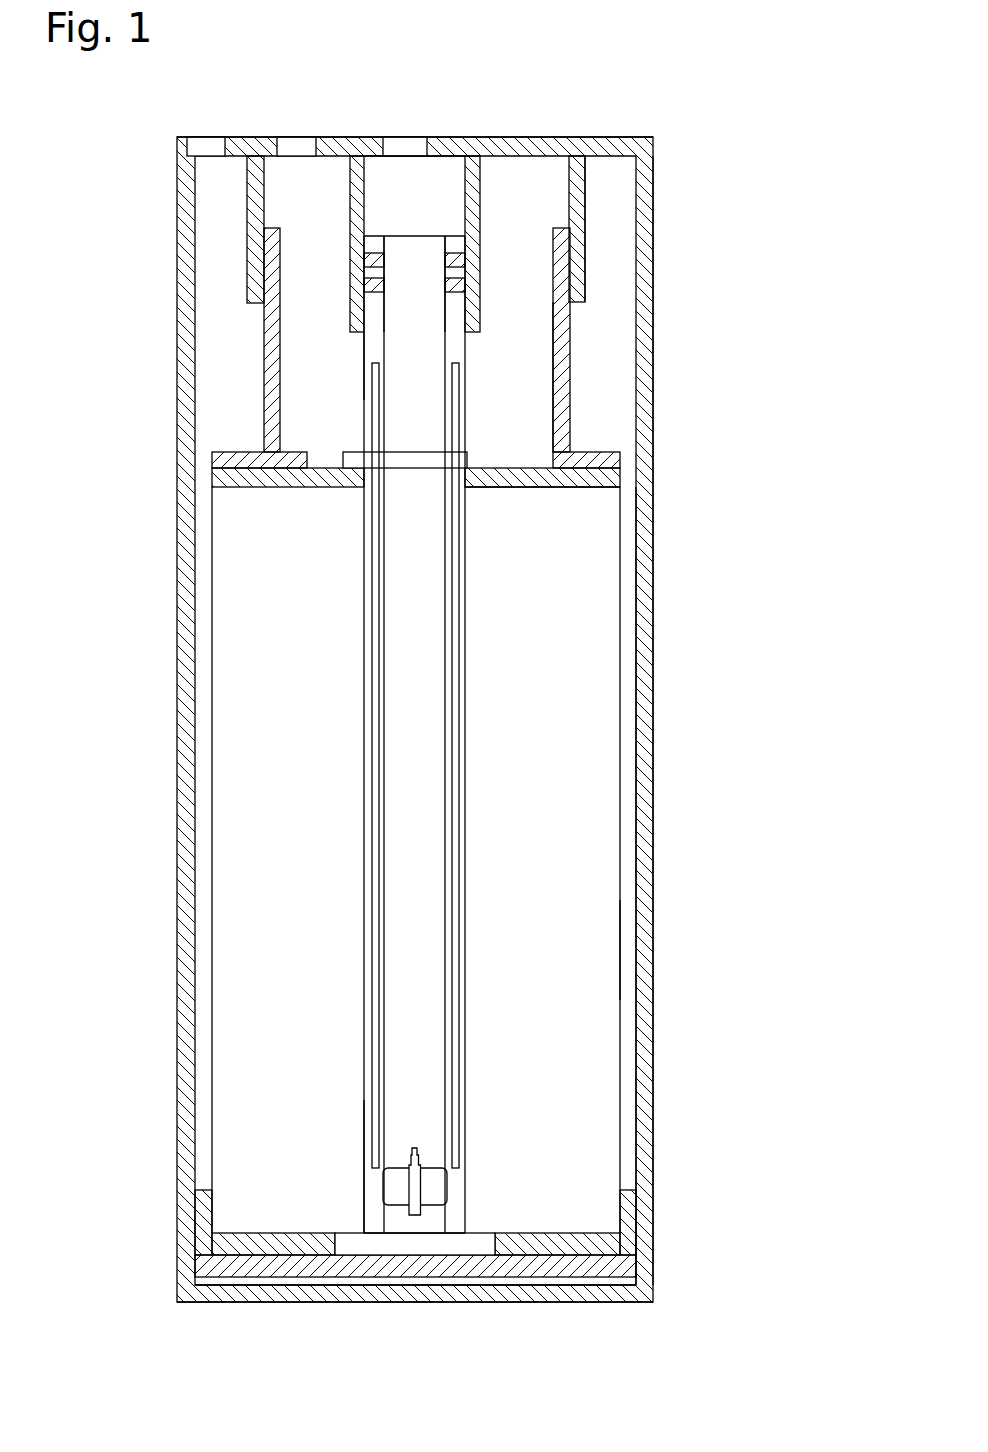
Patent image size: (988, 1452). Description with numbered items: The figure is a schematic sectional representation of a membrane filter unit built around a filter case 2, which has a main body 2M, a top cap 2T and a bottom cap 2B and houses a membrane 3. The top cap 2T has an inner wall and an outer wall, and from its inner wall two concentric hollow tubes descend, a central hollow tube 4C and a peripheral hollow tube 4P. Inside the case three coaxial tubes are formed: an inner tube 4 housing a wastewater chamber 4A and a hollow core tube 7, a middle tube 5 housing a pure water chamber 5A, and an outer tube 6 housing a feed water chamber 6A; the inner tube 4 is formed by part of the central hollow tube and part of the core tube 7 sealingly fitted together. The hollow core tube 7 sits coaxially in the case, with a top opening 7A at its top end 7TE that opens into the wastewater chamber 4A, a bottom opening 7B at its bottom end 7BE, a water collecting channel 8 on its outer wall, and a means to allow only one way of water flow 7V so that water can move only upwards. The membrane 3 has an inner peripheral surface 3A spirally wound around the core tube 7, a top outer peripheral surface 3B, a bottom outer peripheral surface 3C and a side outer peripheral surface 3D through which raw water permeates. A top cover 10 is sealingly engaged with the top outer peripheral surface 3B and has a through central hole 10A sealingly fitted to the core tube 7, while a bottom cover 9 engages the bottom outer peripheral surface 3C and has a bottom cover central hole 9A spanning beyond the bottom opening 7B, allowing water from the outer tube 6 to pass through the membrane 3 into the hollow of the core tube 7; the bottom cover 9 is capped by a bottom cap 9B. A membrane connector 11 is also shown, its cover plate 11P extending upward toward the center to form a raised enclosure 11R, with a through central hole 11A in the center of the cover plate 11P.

The filter case 2 is at (645, 315).
The top cap 2T is at (610, 137).
The main body 2M is at (657, 883).
The bottom cap 2B is at (617, 1292).
The membrane 3 is at (587, 635).
The inner peripheral surface 3A is at (470, 1088).
The top outer peripheral surface 3B is at (557, 490).
The bottom outer peripheral surface 3C is at (557, 1233).
The side outer peripheral surface 3D is at (624, 934).
The inner tube 4 is at (425, 320).
The wastewater chamber 4A is at (435, 198).
The central hollow tube 4C is at (350, 195).
The peripheral hollow tube 4P is at (248, 192).
The middle tube 5 is at (508, 433).
The pure water chamber 5A is at (518, 183).
The outer tube 6 is at (631, 547).
The feed water chamber 6A is at (605, 245).
The hollow core tube 7 is at (420, 812).
The top opening 7A is at (399, 235).
The bottom opening 7B is at (383, 1235).
The means to allow only one way of water flow 7V is at (395, 1190).
The top end 7TE is at (365, 350).
The bottom end 7BE is at (365, 1115).
The water collecting channel 8 is at (455, 720).
The bottom cover 9 is at (537, 1245).
The bottom cover central hole 9A is at (417, 1240).
The bottom cap 9B is at (252, 1292).
The top cover 10 is at (213, 478).
The through central hole 10A is at (400, 462).
The membrane connector 11 is at (227, 457).
The through central hole 11A is at (310, 460).
The cover plate 11P is at (598, 455).
The raised enclosure 11R is at (562, 342).